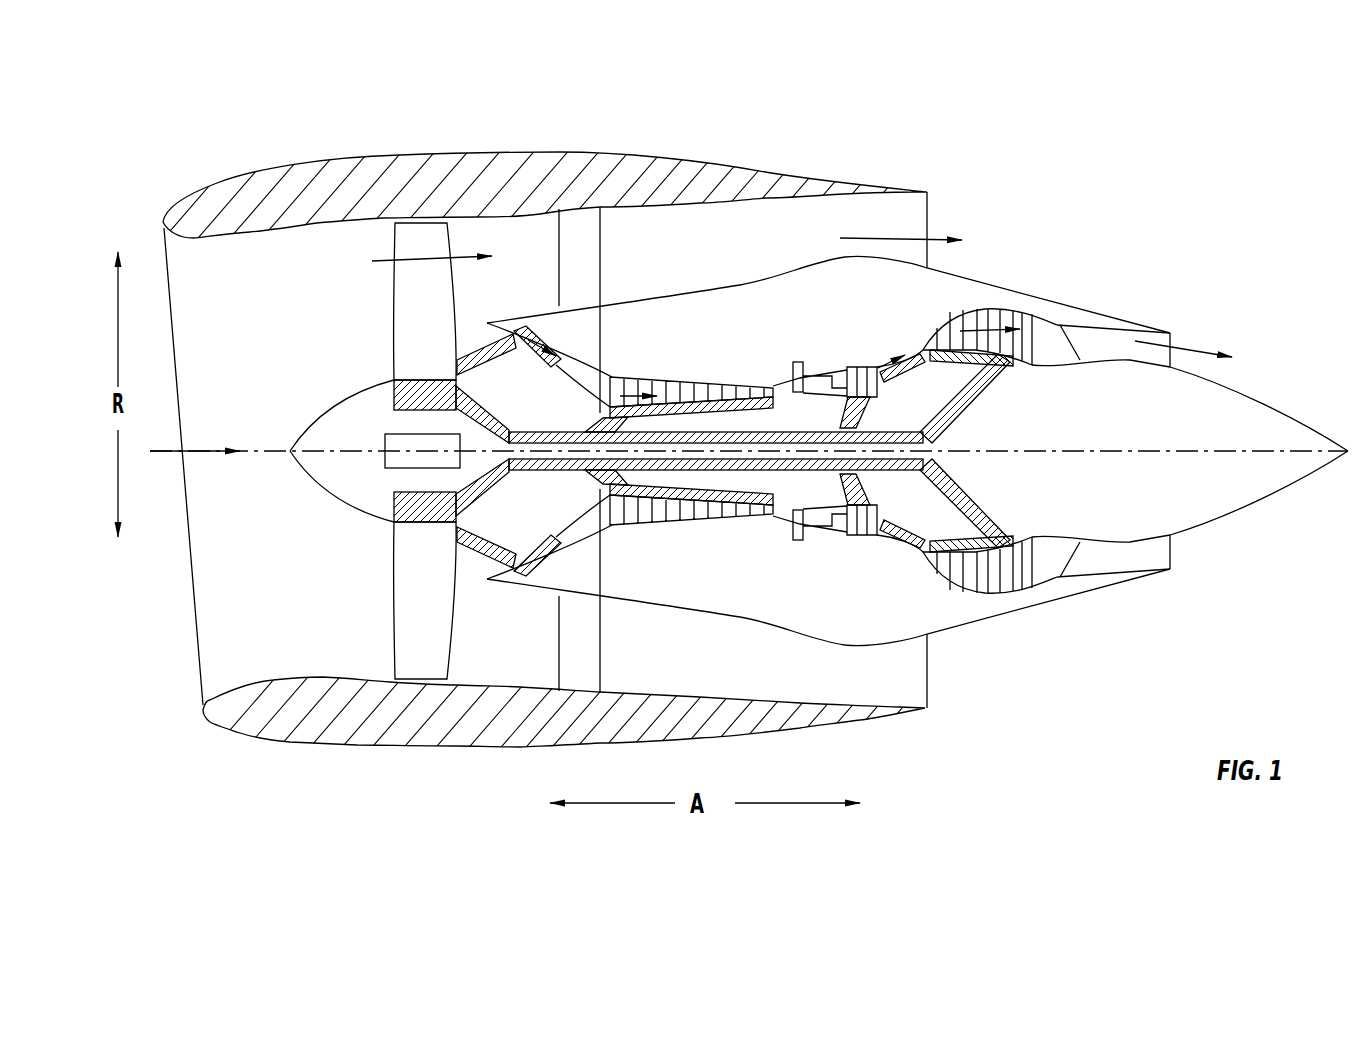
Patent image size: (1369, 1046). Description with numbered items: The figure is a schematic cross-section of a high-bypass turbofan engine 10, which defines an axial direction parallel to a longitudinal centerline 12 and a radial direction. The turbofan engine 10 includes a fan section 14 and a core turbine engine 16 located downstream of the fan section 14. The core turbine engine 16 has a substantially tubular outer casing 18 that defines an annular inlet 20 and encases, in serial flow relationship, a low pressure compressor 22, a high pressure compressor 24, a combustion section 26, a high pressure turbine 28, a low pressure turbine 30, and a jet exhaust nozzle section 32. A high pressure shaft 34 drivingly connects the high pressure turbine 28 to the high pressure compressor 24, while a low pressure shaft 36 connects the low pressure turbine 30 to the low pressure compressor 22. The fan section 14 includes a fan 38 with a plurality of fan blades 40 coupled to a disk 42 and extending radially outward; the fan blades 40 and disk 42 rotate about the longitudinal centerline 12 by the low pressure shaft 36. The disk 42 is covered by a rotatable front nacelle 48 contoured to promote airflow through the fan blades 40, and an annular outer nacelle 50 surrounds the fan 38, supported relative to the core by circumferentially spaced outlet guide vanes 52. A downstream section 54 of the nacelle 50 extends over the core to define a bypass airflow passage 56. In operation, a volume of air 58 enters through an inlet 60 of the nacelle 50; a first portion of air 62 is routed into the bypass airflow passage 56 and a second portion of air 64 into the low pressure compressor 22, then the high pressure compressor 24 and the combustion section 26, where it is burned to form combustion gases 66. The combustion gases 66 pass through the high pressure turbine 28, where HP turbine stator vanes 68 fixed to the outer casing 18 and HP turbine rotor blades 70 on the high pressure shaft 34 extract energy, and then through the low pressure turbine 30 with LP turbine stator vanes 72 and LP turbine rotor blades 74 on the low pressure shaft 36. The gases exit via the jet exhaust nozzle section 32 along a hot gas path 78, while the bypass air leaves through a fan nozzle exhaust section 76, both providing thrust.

The turbofan engine 10 is at (1160, 214).
The longitudinal centerline 12 is at (1090, 448).
The fan section 14 is at (466, 131).
The core turbine engine 16 is at (760, 330).
The outer casing 18 is at (790, 630).
The annular inlet 20 is at (510, 567).
The low pressure compressor 22 is at (562, 538).
The high pressure compressor 24 is at (632, 523).
The combustion section 26 is at (812, 525).
The high pressure turbine 28 is at (885, 528).
The low pressure turbine 30 is at (1022, 605).
The jet exhaust nozzle section 32 is at (1178, 342).
The high pressure shaft 34 is at (856, 397).
The low pressure shaft 36 is at (560, 427).
The fan 38 is at (378, 303).
The fan blades 40 is at (390, 623).
The disk 42 is at (393, 393).
The front nacelle 48 is at (323, 420).
The outer nacelle 50 is at (453, 748).
The outlet guide vanes 52 is at (599, 228).
The downstream section of nacelle 54 is at (749, 160).
The bypass airflow passage 56 is at (738, 248).
The volume of air 58 is at (203, 441).
The inlet 60 is at (197, 670).
The first portion of air 62 is at (398, 255).
The second portion of air 64 is at (476, 330).
The combustion gases 66 is at (970, 308).
The HP turbine stator vanes 68 is at (850, 536).
The HP turbine rotor blades 70 is at (865, 535).
The LP turbine stator vanes 72 is at (932, 566).
The LP turbine rotor blades 74 is at (945, 583).
The fan nozzle exhaust section 76 is at (927, 213).
The hot gas path 78 is at (913, 338).